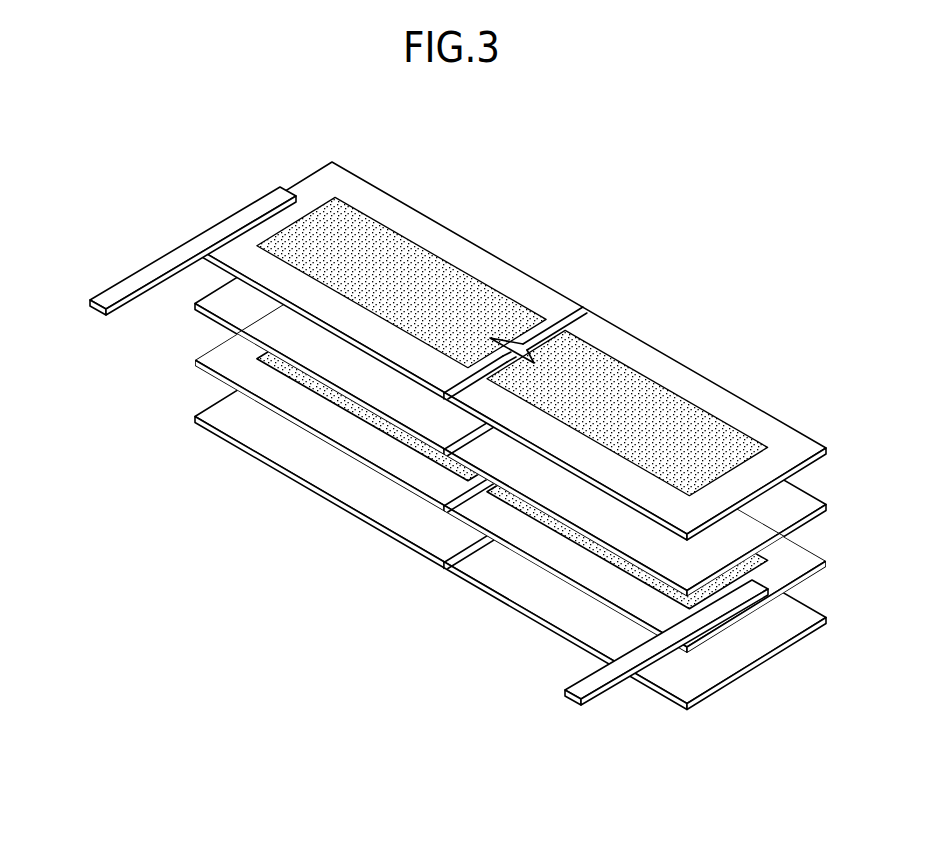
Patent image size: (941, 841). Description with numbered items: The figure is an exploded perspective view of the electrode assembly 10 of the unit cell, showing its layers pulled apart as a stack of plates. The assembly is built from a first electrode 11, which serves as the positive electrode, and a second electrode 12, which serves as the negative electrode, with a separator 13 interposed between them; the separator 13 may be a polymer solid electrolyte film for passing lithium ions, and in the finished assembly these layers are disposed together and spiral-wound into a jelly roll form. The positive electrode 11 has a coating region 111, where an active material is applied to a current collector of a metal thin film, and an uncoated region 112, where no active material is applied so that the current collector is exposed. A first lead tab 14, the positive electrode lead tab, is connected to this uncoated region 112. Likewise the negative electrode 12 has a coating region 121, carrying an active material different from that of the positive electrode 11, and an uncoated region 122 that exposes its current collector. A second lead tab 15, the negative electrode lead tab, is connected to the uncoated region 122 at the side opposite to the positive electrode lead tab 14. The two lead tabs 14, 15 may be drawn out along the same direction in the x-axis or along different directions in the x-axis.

The electrode assembly 10 is at (591, 188).
The first electrode 11 is at (547, 491).
The coating region 111 is at (740, 573).
The uncoated region 112 is at (792, 567).
The second electrode 12 is at (510, 317).
The coating region 121 is at (375, 240).
The uncoated region 122 is at (411, 228).
The separator 13 is at (223, 307).
The first lead tab 14 is at (597, 684).
The second lead tab 15 is at (144, 276).